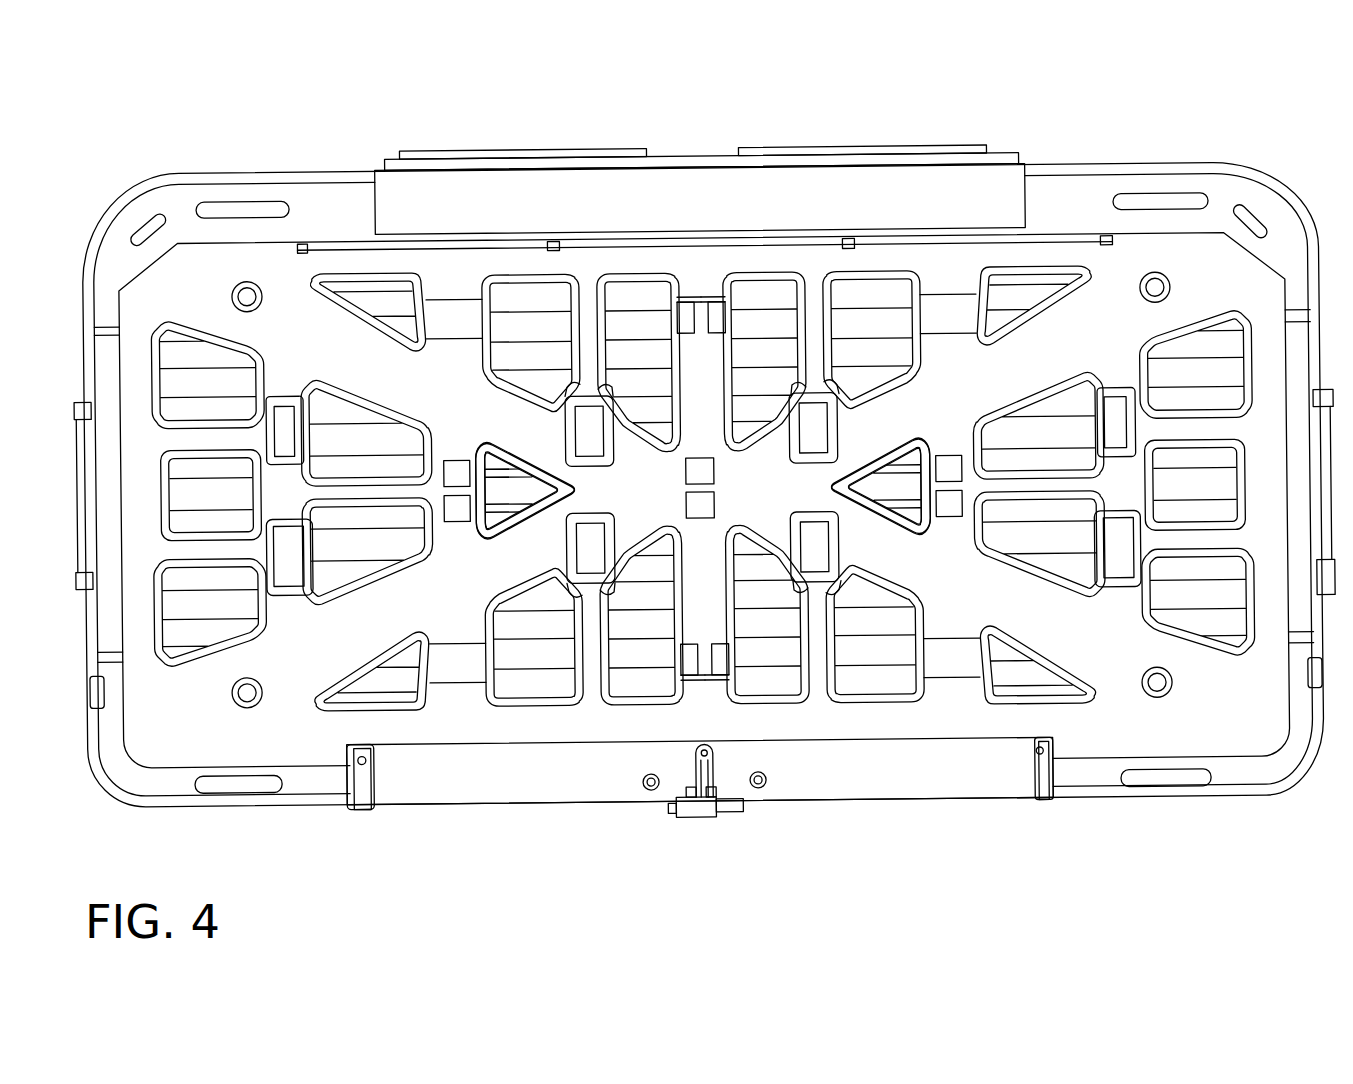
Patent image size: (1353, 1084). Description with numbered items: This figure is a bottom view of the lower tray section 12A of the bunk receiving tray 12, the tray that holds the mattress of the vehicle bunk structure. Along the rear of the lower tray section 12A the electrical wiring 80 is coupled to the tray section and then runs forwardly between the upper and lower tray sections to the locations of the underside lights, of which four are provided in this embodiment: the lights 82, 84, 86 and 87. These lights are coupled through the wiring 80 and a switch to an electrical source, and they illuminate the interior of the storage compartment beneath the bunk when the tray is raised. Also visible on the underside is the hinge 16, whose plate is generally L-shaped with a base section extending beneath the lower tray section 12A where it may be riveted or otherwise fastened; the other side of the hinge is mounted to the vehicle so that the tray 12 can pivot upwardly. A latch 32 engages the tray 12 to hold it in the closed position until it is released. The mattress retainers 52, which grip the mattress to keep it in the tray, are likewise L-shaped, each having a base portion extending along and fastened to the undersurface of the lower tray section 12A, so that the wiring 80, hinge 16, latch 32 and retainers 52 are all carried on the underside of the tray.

The bunk receiving tray 12 is at (1080, 732).
The lower tray section 12A is at (883, 779).
The hinge 16 is at (899, 195).
The latch 32 is at (700, 820).
The mattress retainers 52 is at (358, 794).
The electrical wiring 80 is at (606, 239).
The light 82 is at (1124, 407).
The light 84 is at (810, 438).
The light 86 is at (587, 428).
The light 87 is at (283, 411).